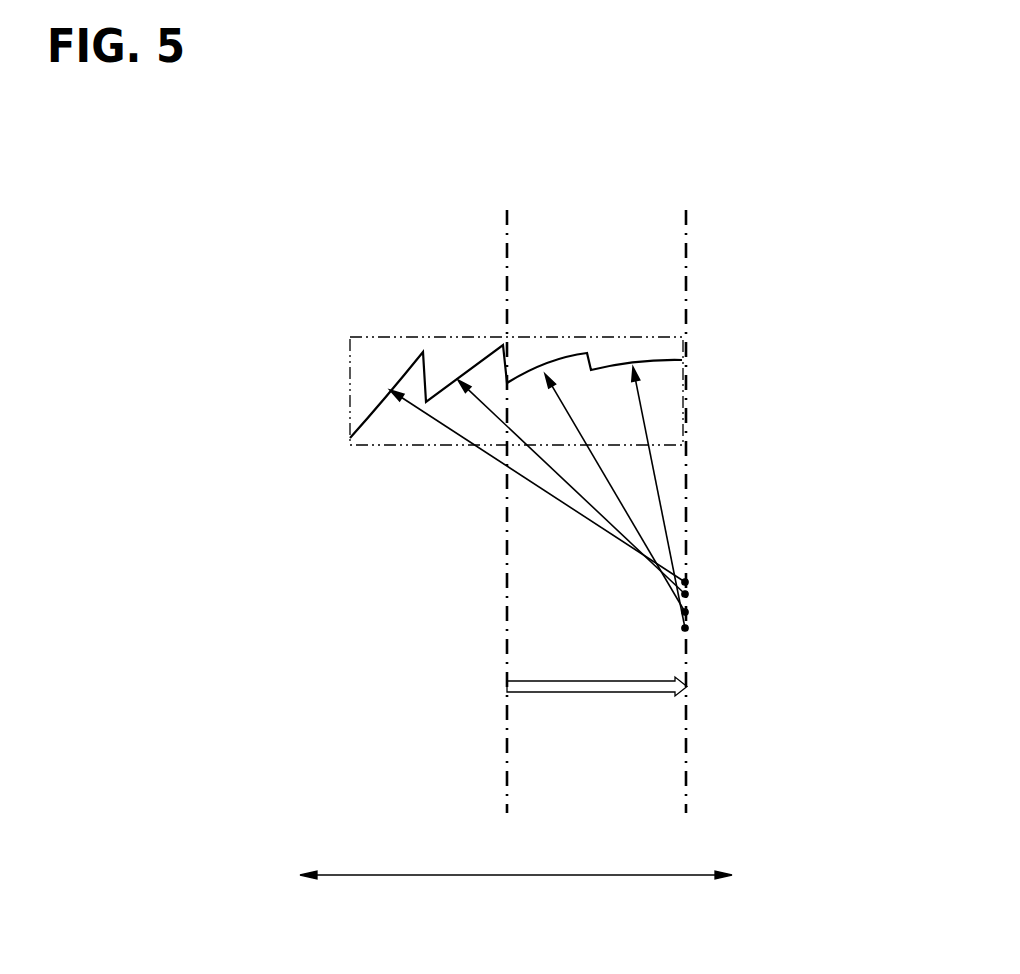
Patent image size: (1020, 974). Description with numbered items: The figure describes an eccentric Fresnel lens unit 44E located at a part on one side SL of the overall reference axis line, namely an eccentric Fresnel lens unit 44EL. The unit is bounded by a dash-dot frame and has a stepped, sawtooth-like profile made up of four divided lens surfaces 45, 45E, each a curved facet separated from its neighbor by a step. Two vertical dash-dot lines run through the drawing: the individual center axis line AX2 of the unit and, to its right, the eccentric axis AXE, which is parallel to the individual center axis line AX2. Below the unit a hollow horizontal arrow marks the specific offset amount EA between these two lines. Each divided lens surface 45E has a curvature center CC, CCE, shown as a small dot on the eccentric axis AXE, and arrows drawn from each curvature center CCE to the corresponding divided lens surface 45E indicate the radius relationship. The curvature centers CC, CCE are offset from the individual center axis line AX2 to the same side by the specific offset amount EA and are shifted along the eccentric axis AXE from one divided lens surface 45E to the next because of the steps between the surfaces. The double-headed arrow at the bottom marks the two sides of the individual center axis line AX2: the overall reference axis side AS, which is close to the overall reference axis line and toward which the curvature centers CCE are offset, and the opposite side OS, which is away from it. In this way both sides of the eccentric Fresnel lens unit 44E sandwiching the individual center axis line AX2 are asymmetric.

The divided lens surface 45 is at (516, 335).
The divided lens surface 45E is at (400, 360).
The one side SL is at (415, 391).
The eccentric Fresnel lens unit 44E is at (415, 391).
The eccentric Fresnel lens unit 44EL is at (350, 347).
The curvature center CC is at (606, 520).
The curvature center CCE is at (688, 582).
The individual center axis line AX2 is at (508, 248).
The eccentric axis AXE is at (688, 247).
The specific offset amount EA is at (595, 694).
The opposite side OS is at (491, 877).
The overall reference axis side AS is at (741, 877).